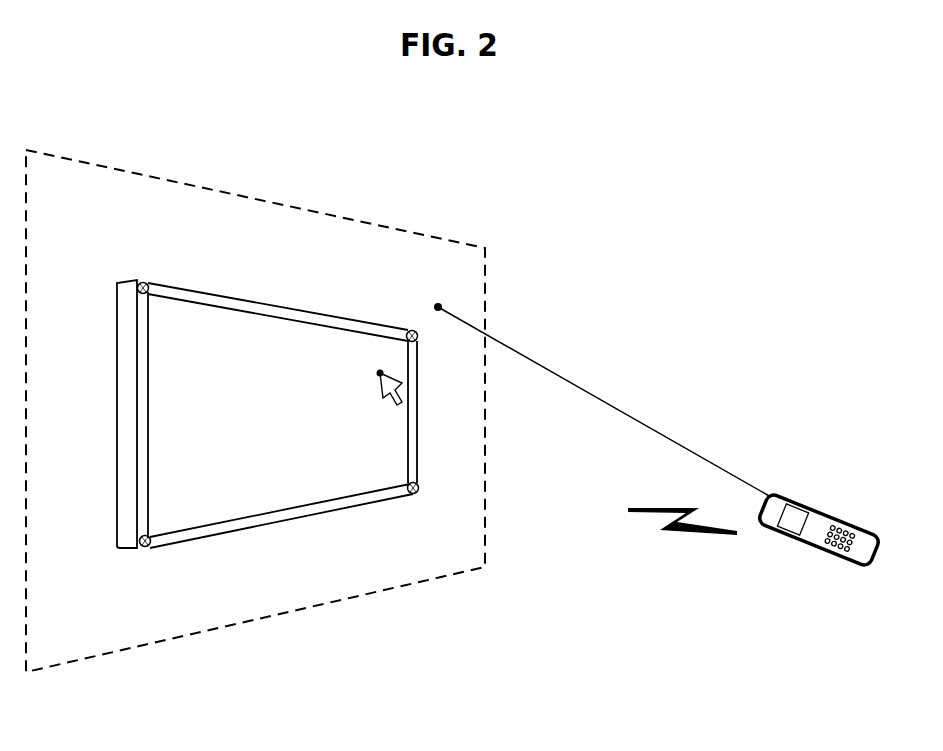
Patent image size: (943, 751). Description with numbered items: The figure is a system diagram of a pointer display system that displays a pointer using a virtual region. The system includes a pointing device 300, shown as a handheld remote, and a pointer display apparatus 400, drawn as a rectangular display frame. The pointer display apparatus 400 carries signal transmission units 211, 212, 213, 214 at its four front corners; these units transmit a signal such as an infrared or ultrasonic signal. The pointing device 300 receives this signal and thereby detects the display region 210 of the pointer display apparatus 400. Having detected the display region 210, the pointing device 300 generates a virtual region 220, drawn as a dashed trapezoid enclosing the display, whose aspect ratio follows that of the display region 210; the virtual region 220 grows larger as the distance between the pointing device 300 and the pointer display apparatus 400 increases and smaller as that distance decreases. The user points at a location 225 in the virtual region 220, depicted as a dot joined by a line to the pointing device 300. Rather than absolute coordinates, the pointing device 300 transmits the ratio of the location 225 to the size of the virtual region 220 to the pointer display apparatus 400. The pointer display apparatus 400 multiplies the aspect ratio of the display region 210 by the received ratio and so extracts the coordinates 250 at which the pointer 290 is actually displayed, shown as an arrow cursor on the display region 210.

The virtual region 220 is at (172, 180).
The display region 210 is at (265, 460).
The signal transmission unit 211 is at (146, 283).
The signal transmission unit 212 is at (412, 331).
The signal transmission unit 213 is at (143, 537).
The signal transmission unit 214 is at (412, 485).
The location 225 is at (438, 307).
The coordinates 250 is at (380, 373).
The pointer 290 is at (393, 389).
The pointing device 300 is at (830, 508).
The pointer display apparatus 400 is at (285, 522).